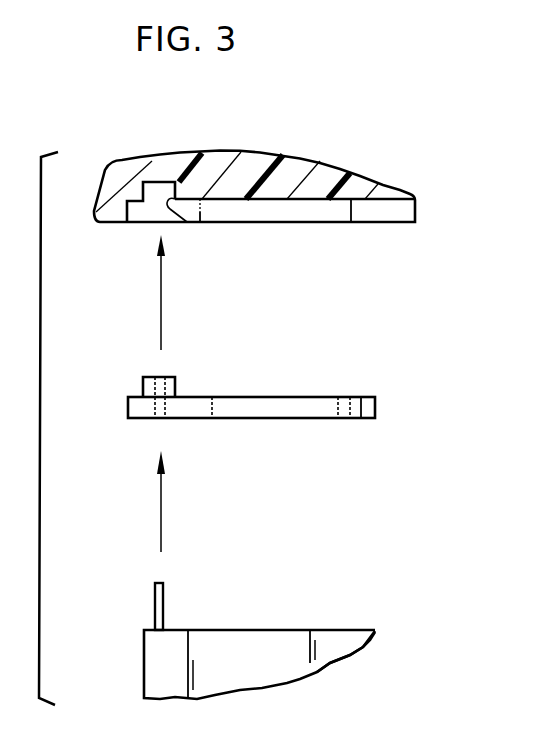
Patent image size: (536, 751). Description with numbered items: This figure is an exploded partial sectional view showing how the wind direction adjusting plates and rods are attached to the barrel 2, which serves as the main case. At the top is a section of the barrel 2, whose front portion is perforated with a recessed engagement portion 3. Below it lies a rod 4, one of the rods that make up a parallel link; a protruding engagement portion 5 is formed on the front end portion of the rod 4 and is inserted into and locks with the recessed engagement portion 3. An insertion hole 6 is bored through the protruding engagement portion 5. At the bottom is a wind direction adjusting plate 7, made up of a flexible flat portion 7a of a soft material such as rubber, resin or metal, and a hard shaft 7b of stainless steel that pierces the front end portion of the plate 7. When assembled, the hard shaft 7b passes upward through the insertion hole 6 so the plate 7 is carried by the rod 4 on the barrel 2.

The barrel 2 is at (320, 159).
The recessed engagement portion 3 is at (190, 222).
The rod 4 is at (290, 397).
The protruding engagement portion 5 is at (175, 377).
The insertion hole 6 is at (160, 420).
The wind direction adjusting plate 7 is at (253, 610).
The flexible flat portion 7a is at (337, 630).
The hard shaft 7b is at (163, 590).